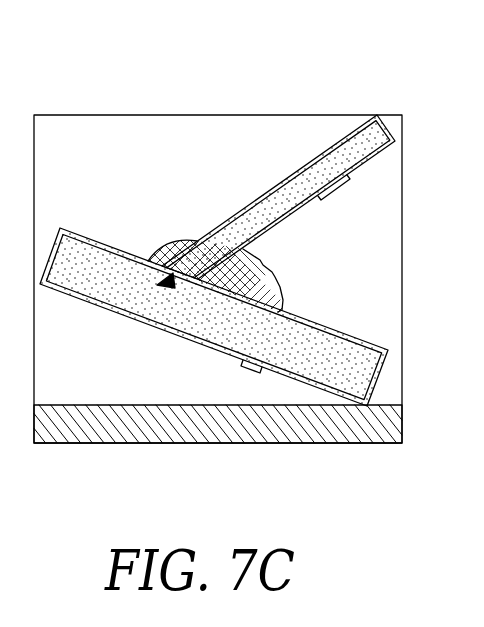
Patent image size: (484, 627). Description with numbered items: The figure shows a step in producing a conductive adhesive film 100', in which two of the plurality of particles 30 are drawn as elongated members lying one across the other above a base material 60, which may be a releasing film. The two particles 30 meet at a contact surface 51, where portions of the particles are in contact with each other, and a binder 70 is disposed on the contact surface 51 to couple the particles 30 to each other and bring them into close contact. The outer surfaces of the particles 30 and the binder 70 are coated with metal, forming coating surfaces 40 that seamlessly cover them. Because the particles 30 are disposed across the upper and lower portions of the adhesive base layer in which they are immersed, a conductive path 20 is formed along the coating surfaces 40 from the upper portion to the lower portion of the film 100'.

The conductive adhesive film 100' is at (218, 237).
The conductive path 20 is at (77, 299).
The particles 30 is at (308, 182).
The coating surfaces 40 is at (237, 212).
The contact surface 51 is at (165, 285).
The base material 60 is at (207, 427).
The binder 70 is at (157, 262).